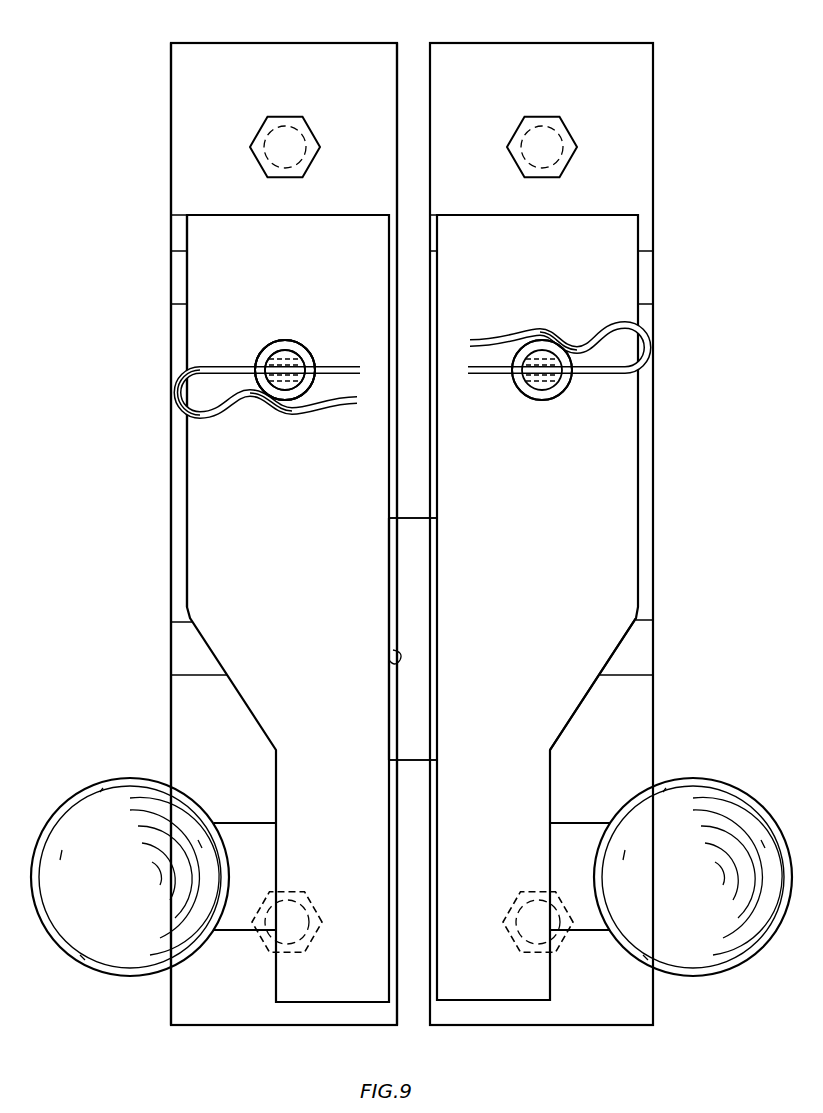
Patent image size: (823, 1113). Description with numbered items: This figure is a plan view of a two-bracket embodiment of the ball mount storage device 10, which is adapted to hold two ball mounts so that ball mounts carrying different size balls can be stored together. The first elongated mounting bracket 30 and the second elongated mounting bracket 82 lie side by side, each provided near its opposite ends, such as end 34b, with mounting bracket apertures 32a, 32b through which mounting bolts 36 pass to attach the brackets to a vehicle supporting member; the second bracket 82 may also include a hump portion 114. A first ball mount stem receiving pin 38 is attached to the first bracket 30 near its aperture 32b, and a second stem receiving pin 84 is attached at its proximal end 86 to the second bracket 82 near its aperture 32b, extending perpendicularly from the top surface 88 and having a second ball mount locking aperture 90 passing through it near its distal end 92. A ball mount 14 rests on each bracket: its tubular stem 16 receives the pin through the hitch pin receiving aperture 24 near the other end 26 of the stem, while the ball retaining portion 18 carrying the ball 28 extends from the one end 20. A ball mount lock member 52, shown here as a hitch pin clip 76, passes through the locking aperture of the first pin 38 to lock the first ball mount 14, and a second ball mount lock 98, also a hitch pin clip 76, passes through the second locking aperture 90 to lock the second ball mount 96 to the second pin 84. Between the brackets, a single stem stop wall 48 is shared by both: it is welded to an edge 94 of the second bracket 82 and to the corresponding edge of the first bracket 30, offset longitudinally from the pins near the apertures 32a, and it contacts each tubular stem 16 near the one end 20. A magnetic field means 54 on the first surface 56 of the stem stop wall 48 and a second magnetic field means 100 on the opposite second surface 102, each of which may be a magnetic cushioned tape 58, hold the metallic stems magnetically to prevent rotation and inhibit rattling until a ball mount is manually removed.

The ball mount storage device 10 is at (655, 98).
The ball mount 14 is at (197, 232).
The tubular stem 16 is at (205, 535).
The ball retaining portion 18 is at (608, 630).
The one end of the tubular stem 20 is at (215, 628).
The hitch pin receiving aperture 24 is at (285, 388).
The other end of the stem 26 is at (200, 278).
The ball 28 is at (95, 800).
The mounting bracket 30 is at (653, 1012).
The mounting bracket aperture 32a is at (306, 905).
The mounting bracket aperture 32b is at (292, 130).
The end of mounting bracket 34b is at (187, 166).
The mounting bolt 36 is at (262, 135).
The first ball mount stem receiving pin 38 is at (552, 396).
The stem stop wall 48 is at (400, 518).
The ball mount lock member 52 is at (602, 330).
The magnetic field means 54 is at (437, 632).
The first surface of the stem stop wall 56 is at (437, 726).
The magnetic cushioned tape 58 is at (389, 595).
The hitch pin clip 76 is at (536, 335).
The second elongated mounting bracket 82 is at (171, 93).
The second stem receiving pin 84 is at (301, 345).
The proximal end of second stem receiving pin 86 is at (262, 346).
The top surface of second mounting bracket 88 is at (214, 55).
The second ball mount locking aperture 90 is at (288, 410).
The distal end of second stem receiving pin 92 is at (306, 358).
The edge of second mounting bracket 94 is at (397, 165).
The second ball mount 96 is at (195, 487).
The second ball mount lock 98 is at (216, 420).
The second magnetic field means 100 is at (389, 540).
The second surface of the stem stop wall 102 is at (392, 656).
The hump portion 114 is at (171, 440).